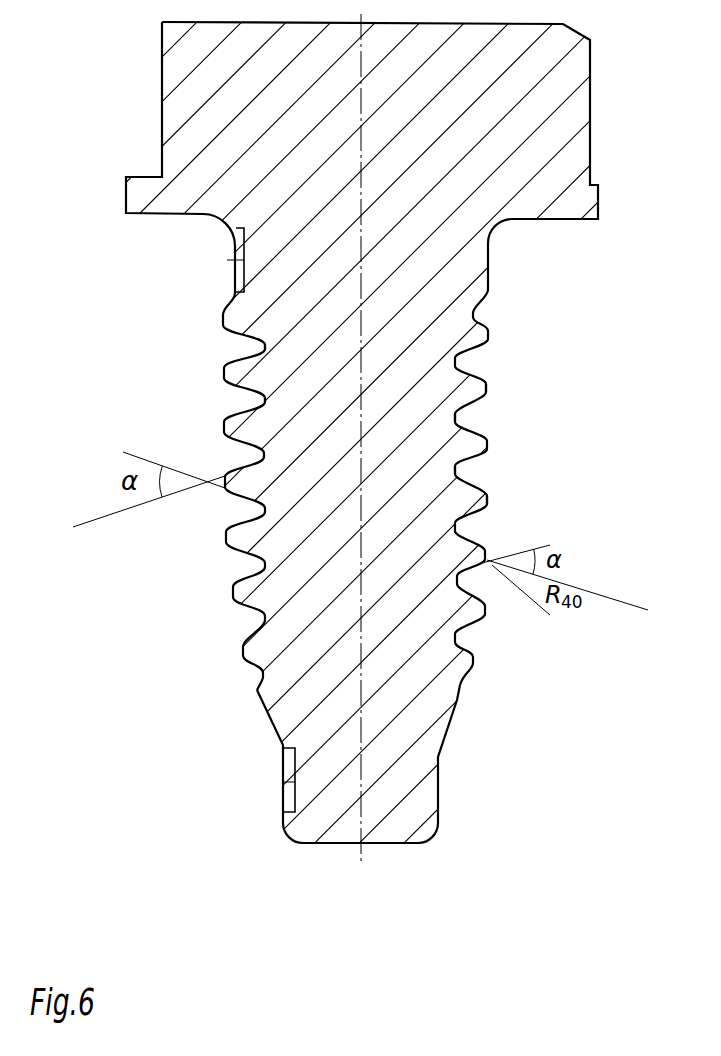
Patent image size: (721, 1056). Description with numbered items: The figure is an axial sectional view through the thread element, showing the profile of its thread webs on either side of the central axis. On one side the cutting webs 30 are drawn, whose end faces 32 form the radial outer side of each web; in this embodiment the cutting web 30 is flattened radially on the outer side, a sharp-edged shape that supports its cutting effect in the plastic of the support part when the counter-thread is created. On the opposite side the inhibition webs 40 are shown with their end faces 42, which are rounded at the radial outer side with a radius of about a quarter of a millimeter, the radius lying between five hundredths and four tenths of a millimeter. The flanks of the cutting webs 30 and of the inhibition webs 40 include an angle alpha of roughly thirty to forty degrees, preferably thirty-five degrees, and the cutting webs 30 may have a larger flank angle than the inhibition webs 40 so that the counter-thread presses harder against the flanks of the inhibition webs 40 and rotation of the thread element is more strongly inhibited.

The cutting web 30 is at (224, 428).
The end face of the cutting web 32 is at (223, 371).
The inhibition web 40 is at (488, 445).
The end face of the inhibition web 42 is at (468, 497).